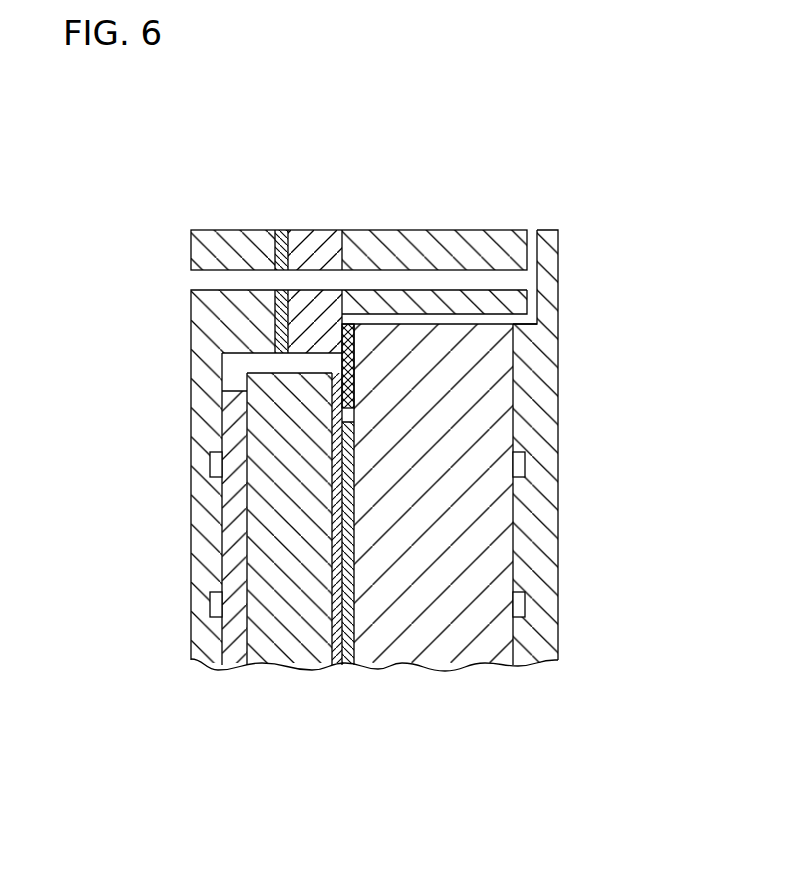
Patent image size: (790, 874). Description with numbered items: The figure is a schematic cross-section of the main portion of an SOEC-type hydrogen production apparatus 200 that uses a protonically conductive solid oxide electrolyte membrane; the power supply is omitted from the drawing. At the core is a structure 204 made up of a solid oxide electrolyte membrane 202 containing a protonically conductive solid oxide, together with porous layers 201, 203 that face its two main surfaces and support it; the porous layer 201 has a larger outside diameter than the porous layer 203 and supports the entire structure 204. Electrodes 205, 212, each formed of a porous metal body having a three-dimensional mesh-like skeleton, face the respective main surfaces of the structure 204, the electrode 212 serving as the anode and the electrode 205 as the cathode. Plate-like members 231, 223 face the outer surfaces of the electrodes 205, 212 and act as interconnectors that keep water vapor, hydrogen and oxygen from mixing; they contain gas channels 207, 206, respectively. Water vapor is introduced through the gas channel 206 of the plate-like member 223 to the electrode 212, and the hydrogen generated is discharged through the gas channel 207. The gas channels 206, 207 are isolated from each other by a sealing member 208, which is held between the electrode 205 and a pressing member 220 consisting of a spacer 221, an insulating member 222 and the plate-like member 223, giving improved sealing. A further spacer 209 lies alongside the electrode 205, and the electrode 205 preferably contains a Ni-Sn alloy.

The hydrogen production apparatus 200 is at (442, 168).
The porous layer 201 is at (296, 655).
The solid oxide electrolyte membrane 202 is at (338, 660).
The porous layer 203 is at (367, 580).
The structure 204 is at (324, 575).
The electrode 205 is at (473, 652).
The gas channel 206 is at (213, 603).
The gas channel 207 is at (525, 601).
The sealing member 208 is at (348, 348).
The spacer 209 is at (503, 298).
The electrode 212 is at (231, 654).
The pressing member 220 is at (266, 238).
The spacer 221 is at (305, 307).
The insulating member 222 is at (275, 303).
The plate-like member 223 is at (229, 312).
The plate-like member 231 is at (543, 340).